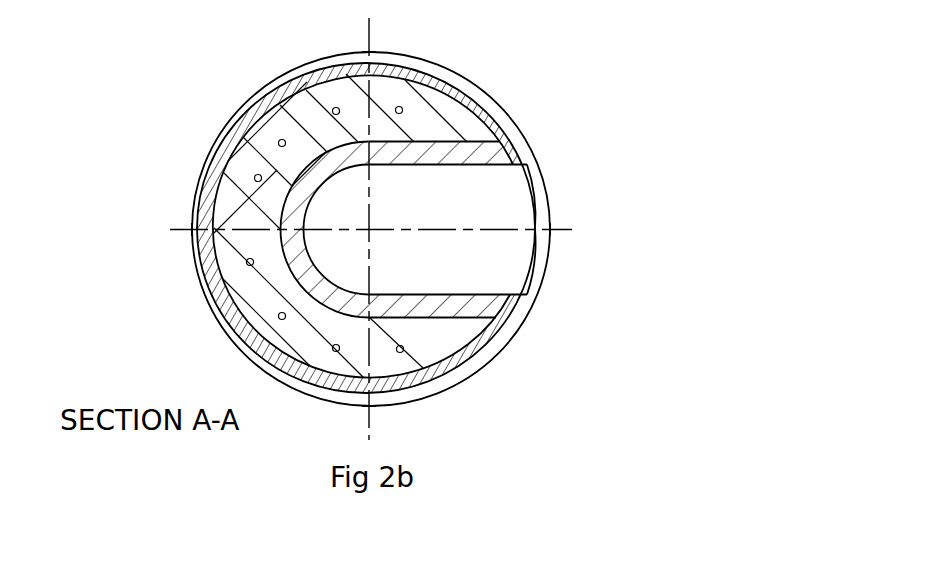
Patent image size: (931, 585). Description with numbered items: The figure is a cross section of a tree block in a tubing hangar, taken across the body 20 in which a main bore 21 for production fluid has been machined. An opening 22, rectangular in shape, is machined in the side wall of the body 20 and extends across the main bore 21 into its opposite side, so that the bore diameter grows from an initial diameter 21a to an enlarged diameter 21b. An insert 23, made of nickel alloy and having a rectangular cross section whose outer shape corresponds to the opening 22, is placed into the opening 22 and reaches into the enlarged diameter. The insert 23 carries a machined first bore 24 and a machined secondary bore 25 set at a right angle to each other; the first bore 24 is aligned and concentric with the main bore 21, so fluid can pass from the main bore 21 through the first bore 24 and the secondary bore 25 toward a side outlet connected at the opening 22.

The body 20 is at (435, 118).
The main bore 21 is at (338, 257).
The initial diameter of the main bore 21a is at (338, 160).
The enlarged diameter of the main bore 21b is at (292, 167).
The opening 22 is at (498, 262).
The insert 23 is at (445, 305).
The first bore 24 is at (333, 214).
The secondary bore 25 is at (487, 197).